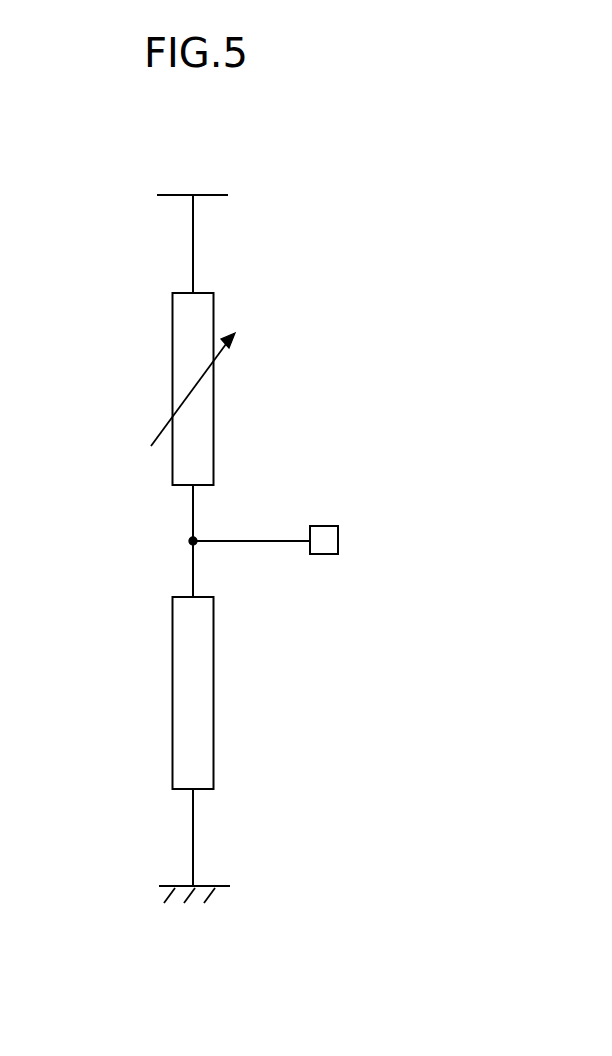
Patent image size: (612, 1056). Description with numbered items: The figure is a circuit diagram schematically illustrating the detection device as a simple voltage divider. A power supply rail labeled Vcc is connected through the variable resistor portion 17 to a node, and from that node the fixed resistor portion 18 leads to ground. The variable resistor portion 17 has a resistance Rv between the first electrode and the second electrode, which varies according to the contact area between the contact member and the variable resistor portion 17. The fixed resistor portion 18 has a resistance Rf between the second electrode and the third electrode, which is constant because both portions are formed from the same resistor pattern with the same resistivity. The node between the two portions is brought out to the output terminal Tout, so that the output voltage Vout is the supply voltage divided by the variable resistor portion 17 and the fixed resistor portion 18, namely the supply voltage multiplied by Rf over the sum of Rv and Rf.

The variable resistor portion 17 is at (170, 389).
The fixed resistor portion 18 is at (170, 693).
The resistance of the variable resistor portion Rv is at (202, 389).
The resistance of the fixed resistor portion Rf is at (213, 693).
The supply voltage Vcc is at (192, 228).
The output terminal Tout is at (323, 526).
The output voltage Vout is at (294, 542).